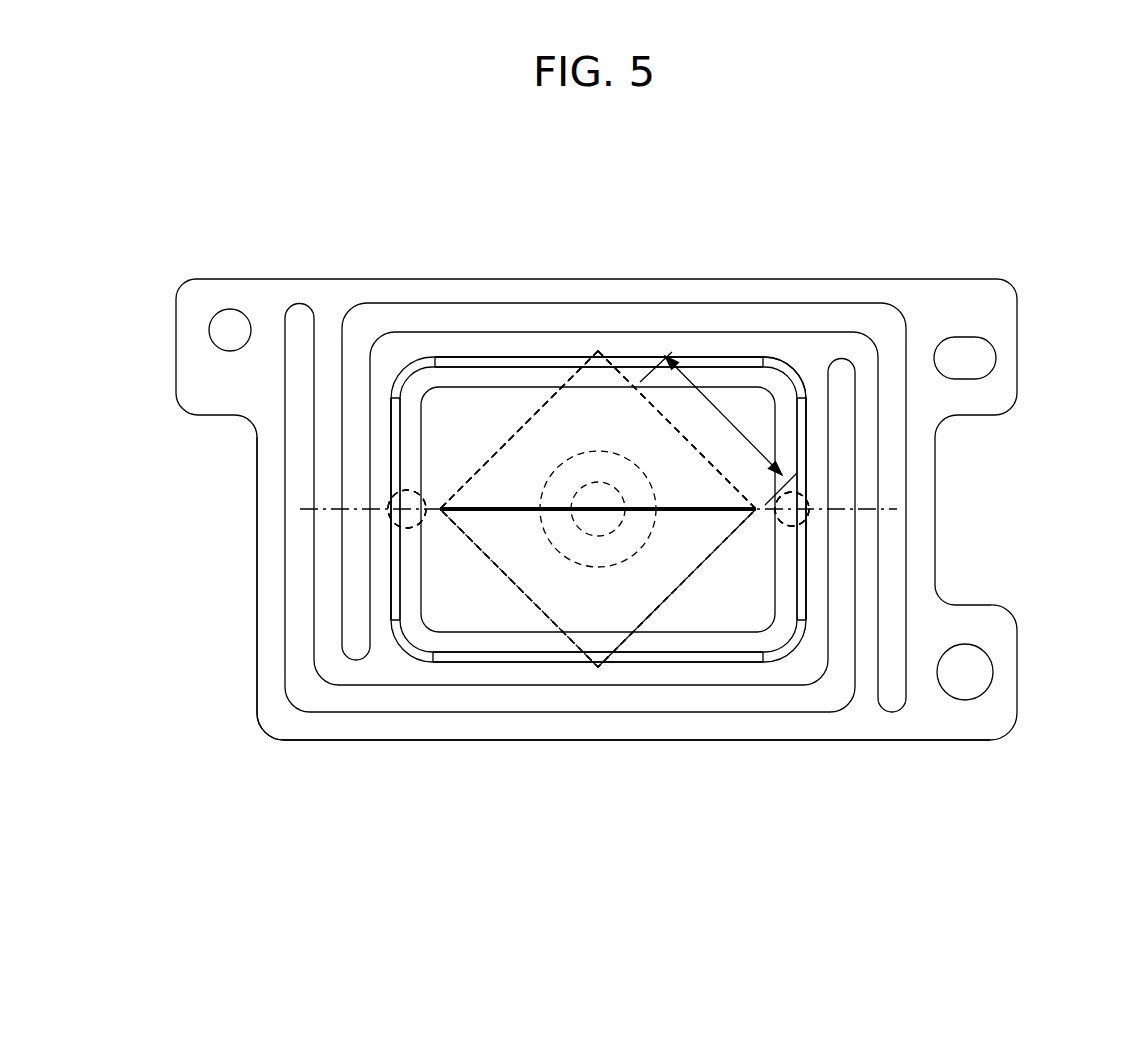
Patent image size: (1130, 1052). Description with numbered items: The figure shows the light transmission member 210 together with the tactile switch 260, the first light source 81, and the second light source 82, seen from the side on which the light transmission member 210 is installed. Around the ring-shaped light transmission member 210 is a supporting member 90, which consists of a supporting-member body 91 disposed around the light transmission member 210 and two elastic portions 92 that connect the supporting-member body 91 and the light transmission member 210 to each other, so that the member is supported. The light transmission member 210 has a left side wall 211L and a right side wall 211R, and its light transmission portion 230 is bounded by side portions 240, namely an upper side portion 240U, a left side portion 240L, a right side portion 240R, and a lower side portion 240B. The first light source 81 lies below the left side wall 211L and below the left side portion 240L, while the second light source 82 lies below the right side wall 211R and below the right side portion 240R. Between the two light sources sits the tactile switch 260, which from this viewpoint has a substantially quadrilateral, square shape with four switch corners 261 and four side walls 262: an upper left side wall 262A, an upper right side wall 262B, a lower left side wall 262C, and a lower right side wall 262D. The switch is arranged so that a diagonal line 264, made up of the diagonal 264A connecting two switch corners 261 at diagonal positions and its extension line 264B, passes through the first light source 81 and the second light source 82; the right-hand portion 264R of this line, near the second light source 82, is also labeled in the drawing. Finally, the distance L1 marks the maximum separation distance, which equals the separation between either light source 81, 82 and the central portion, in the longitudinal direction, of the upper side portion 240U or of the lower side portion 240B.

The supporting member 90 is at (952, 256).
The supporting-member body 91 is at (272, 462).
The elastic portion 92 is at (323, 357).
The light transmission member 210 is at (562, 352).
The left side wall 211L is at (390, 470).
The right side wall 211R is at (807, 583).
The light transmission portion 230 is at (463, 378).
The seal frame 240 is at (598, 509).
The upper side portion 240U is at (505, 380).
The left side portion 240L is at (412, 452).
The right side portion 240R is at (787, 445).
The lower side portion 240B is at (652, 672).
The tactile switch 260 is at (690, 545).
The switch corner 261 is at (598, 350).
The side wall 262 is at (598, 509).
The upper left side wall 262A is at (472, 480).
The upper right side wall 262B is at (628, 382).
The lower left side wall 262C is at (478, 547).
The lower right side wall 262D is at (674, 596).
The slit 264 is at (598, 509).
The diagonal 264A is at (530, 512).
The extension line 264B is at (395, 522).
The right slit portion 264R is at (787, 548).
The first light source 81 is at (418, 535).
The second light source 82 is at (808, 490).
The distance L1 is at (718, 428).